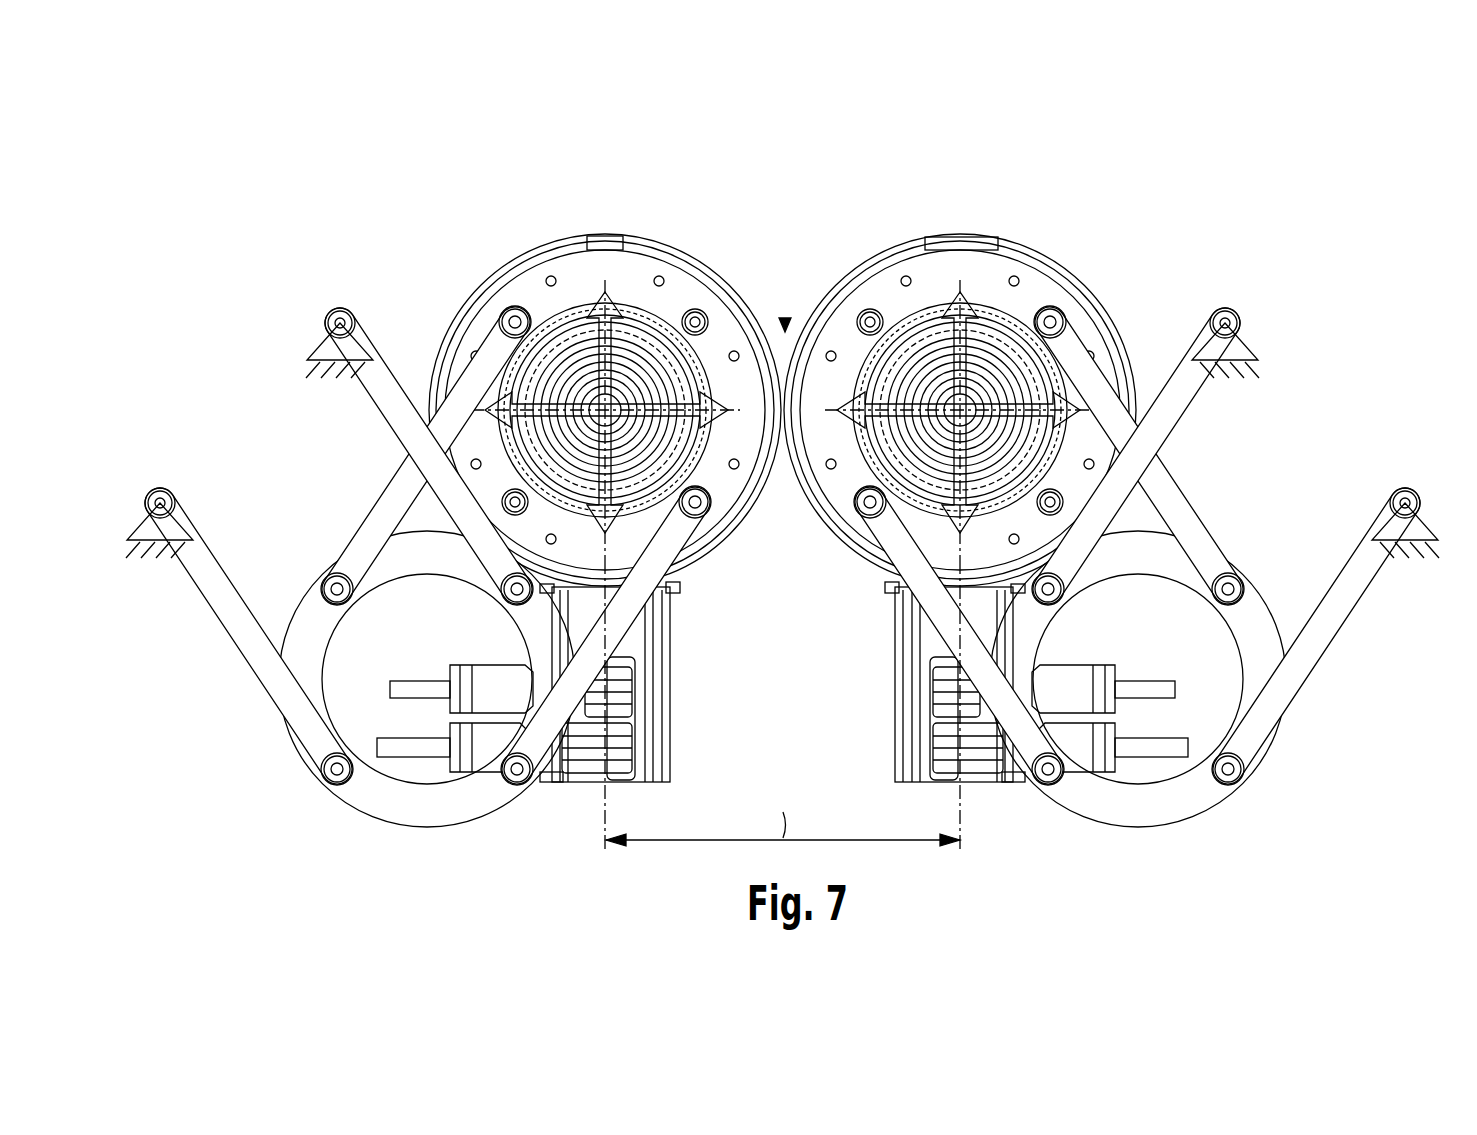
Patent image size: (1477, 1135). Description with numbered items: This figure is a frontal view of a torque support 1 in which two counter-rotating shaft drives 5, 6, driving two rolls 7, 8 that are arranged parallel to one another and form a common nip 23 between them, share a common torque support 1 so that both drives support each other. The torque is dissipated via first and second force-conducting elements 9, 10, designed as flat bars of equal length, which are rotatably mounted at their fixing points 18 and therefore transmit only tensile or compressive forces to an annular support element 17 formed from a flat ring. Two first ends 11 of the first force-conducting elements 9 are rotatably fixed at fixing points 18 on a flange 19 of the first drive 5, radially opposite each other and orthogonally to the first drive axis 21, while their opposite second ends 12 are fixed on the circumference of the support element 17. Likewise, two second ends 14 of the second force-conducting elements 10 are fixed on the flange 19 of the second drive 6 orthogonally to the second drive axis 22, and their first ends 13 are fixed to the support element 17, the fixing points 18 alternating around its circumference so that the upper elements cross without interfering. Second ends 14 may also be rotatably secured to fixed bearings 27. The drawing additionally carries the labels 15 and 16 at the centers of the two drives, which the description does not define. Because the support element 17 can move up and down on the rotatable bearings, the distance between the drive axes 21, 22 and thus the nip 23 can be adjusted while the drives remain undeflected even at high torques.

The torque support 1 is at (750, 128).
The first drive 5 is at (1116, 190).
The second drive 6 is at (566, 190).
The roll 7 is at (982, 238).
The roll 8 is at (603, 236).
The first force-conducting element 9 is at (385, 510).
The second force-conducting element 10 is at (395, 405).
The first end 11 is at (508, 312).
The second end 12 is at (333, 580).
The first end 13 is at (512, 597).
The second end 14 is at (340, 308).
The axis of rotation 15 is at (962, 402).
The axis of rotation 16 is at (612, 402).
The support element 17 is at (435, 827).
The fixing point 18 is at (782, 545).
The flange 19 is at (575, 290).
The first drive axis 21 is at (960, 420).
The second drive axis 22 is at (605, 420).
The nip 23 is at (785, 320).
The fixed bearing 27 is at (782, 440).